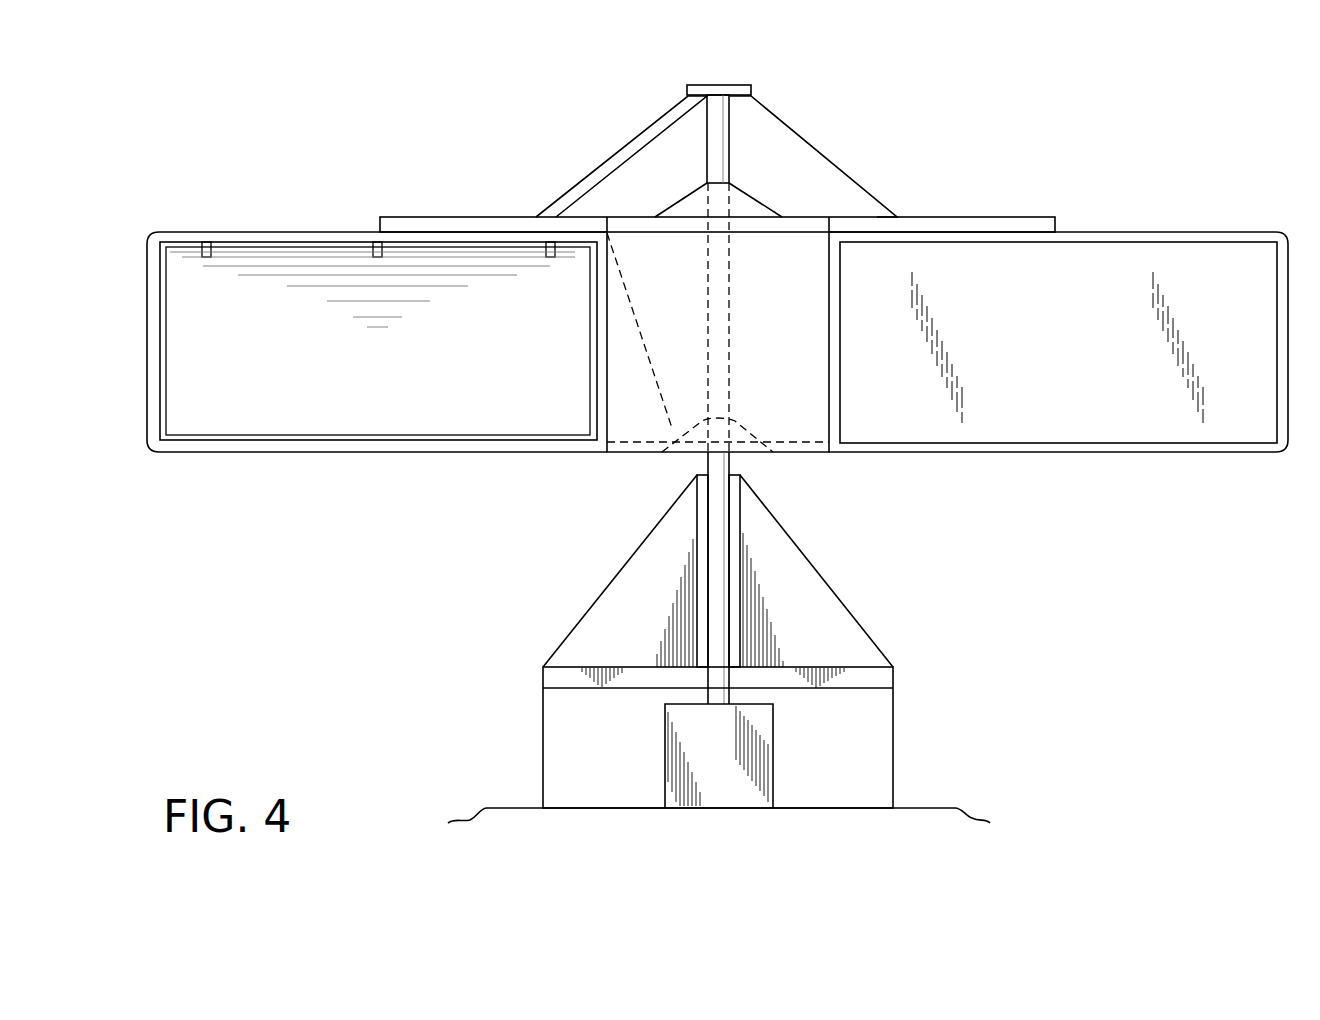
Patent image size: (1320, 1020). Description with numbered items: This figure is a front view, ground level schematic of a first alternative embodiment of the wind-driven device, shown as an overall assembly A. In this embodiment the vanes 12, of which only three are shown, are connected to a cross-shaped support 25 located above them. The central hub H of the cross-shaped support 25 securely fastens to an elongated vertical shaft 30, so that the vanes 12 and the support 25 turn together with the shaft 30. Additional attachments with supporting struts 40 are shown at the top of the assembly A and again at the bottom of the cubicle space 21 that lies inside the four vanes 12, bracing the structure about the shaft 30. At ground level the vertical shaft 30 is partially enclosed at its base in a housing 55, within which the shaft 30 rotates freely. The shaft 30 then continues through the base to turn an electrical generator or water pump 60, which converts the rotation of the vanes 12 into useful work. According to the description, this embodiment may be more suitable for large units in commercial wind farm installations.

The vanes 12 is at (210, 232).
The cross-shaped support 25 is at (963, 217).
The supporting struts 40 is at (822, 172).
The cubicle space 21 is at (755, 438).
The elongated vertical shaft 30 is at (730, 458).
The housing 55 is at (617, 600).
The electrical generator or water pump 60 is at (773, 757).
The assembly A is at (503, 178).
The central hub H is at (798, 95).